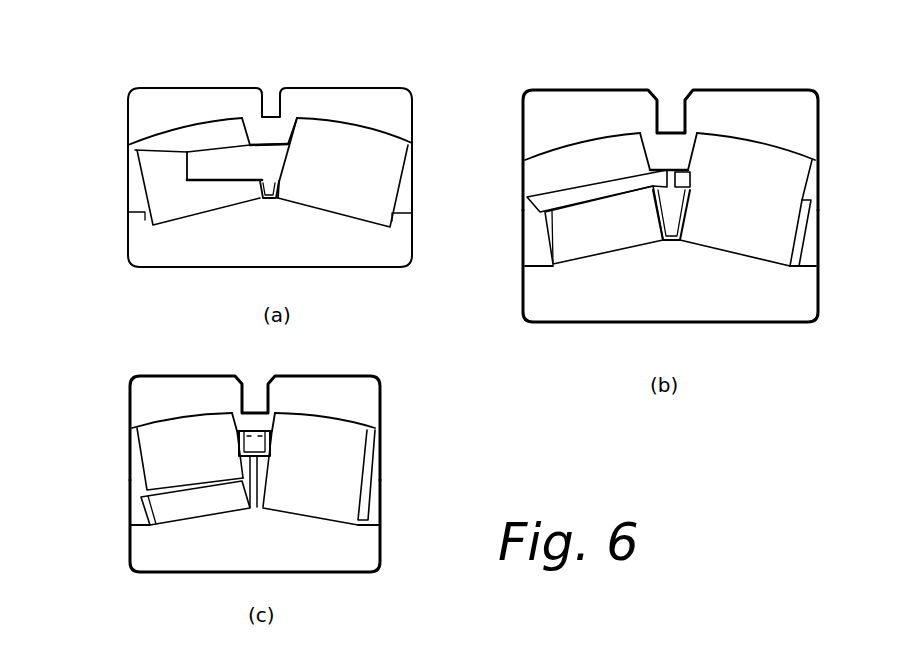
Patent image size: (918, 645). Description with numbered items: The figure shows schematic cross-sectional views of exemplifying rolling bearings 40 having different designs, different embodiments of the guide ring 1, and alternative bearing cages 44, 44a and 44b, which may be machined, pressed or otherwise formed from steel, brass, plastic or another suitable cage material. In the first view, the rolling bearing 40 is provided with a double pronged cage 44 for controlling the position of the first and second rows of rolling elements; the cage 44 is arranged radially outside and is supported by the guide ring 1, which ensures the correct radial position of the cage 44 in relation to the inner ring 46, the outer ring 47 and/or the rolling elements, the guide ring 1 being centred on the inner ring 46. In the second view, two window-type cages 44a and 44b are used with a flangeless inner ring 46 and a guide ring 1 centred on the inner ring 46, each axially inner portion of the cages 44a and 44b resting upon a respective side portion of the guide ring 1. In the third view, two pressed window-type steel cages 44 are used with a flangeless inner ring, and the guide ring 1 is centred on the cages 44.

In FIG. 6a, the rolling bearing 40 is at (104, 86).
In FIG. 6b, the rolling bearing 40 is at (514, 76).
In FIG. 6c, the rolling bearing 40 is at (104, 376).
In FIG. 6a, the outer ring 47 is at (145, 103).
In FIG. 6b, the outer ring 47 is at (537, 122).
In FIG. 6c, the outer ring 47 is at (148, 412).
In FIG. 6a, the inner ring 46 is at (140, 245).
In FIG. 6b, the inner ring 46 is at (547, 293).
In FIG. 6c, the inner ring 46 is at (140, 545).
In FIG. 6a, the cage 44 is at (195, 162).
In FIG. 6c, the cage 44 is at (185, 495).
In FIG. 6b, the window-type cage 44a is at (599, 189).
In FIG. 6b, the window-type cage 44b is at (800, 240).
In FIG. 6a, the guide ring 1 is at (262, 188).
In FIG. 6b, the guide ring 1 is at (663, 225).
In FIG. 6c, the guide ring 1 is at (240, 445).